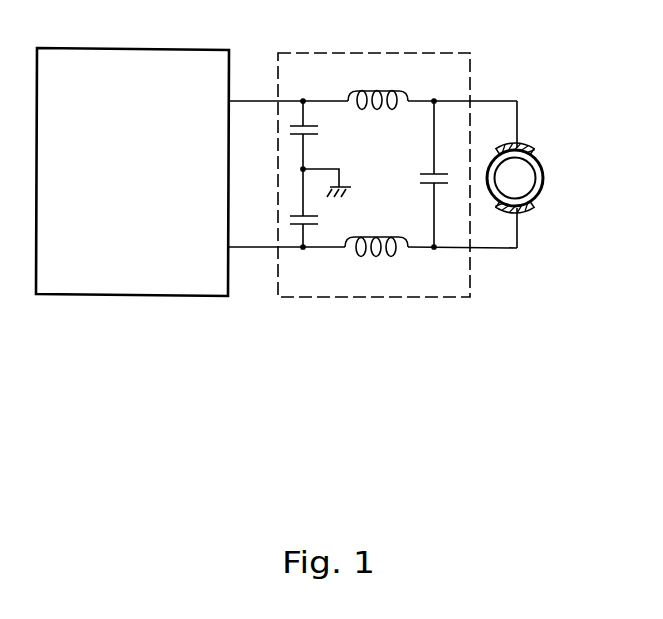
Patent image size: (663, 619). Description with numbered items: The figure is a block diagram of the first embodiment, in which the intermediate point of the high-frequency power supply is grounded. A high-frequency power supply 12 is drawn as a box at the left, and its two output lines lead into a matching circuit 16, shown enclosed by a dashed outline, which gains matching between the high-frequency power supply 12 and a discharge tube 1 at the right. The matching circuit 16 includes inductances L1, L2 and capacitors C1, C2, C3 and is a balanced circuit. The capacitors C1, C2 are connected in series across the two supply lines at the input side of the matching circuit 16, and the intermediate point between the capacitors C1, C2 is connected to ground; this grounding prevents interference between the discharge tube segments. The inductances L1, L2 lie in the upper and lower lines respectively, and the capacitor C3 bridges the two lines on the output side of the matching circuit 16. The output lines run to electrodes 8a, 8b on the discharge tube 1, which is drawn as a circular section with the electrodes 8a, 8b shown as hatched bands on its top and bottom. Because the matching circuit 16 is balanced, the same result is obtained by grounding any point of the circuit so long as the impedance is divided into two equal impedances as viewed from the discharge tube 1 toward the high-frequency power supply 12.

The high-frequency power supply 12 is at (82, 48).
The matching circuit 16 is at (437, 159).
The discharge tube 1 is at (544, 177).
The electrode 8a is at (530, 146).
The electrode 8b is at (531, 210).
The capacitor C1 is at (318, 135).
The capacitor C2 is at (319, 208).
The capacitor C3 is at (441, 174).
The inductance L1 is at (378, 89).
The inductance L2 is at (376, 235).